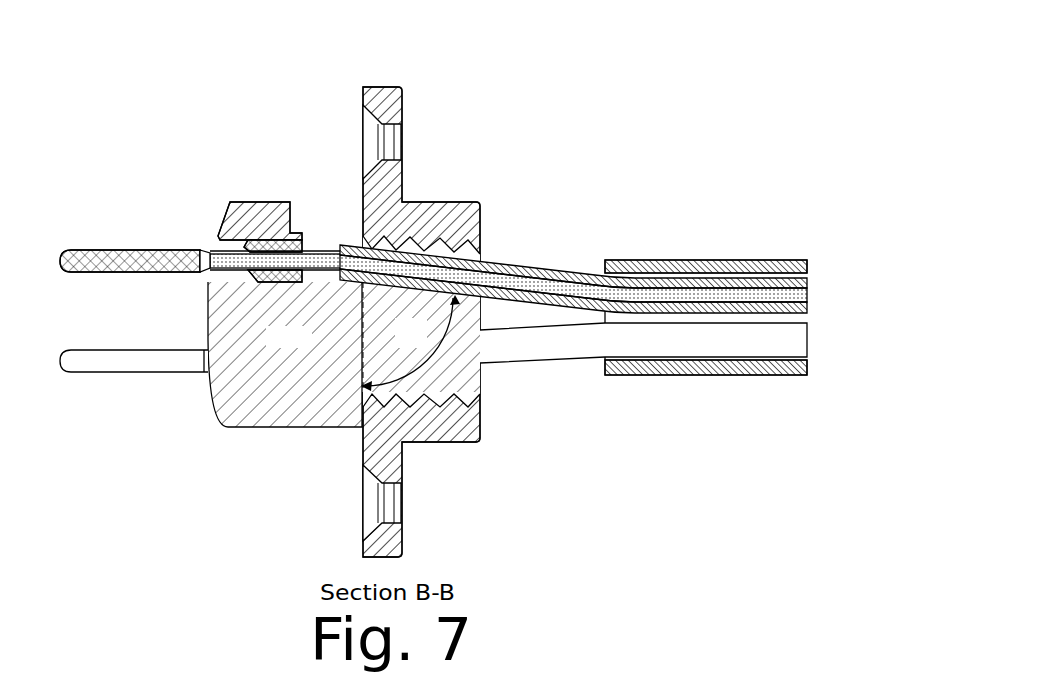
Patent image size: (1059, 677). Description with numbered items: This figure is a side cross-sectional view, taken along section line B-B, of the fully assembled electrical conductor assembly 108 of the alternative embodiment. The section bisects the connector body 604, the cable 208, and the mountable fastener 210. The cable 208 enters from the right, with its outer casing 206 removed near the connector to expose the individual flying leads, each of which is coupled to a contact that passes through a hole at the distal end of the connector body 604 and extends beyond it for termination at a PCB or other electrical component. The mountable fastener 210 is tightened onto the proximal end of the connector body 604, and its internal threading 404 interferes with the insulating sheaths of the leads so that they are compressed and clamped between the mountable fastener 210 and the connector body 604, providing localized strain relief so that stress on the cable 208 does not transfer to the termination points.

The connector assembly 108 is at (481, 280).
The outer casing 206 is at (752, 375).
The cable 208 is at (706, 329).
The mountable fastener 210 is at (447, 322).
The internal threading 404 is at (443, 252).
The connector body 604 is at (307, 346).